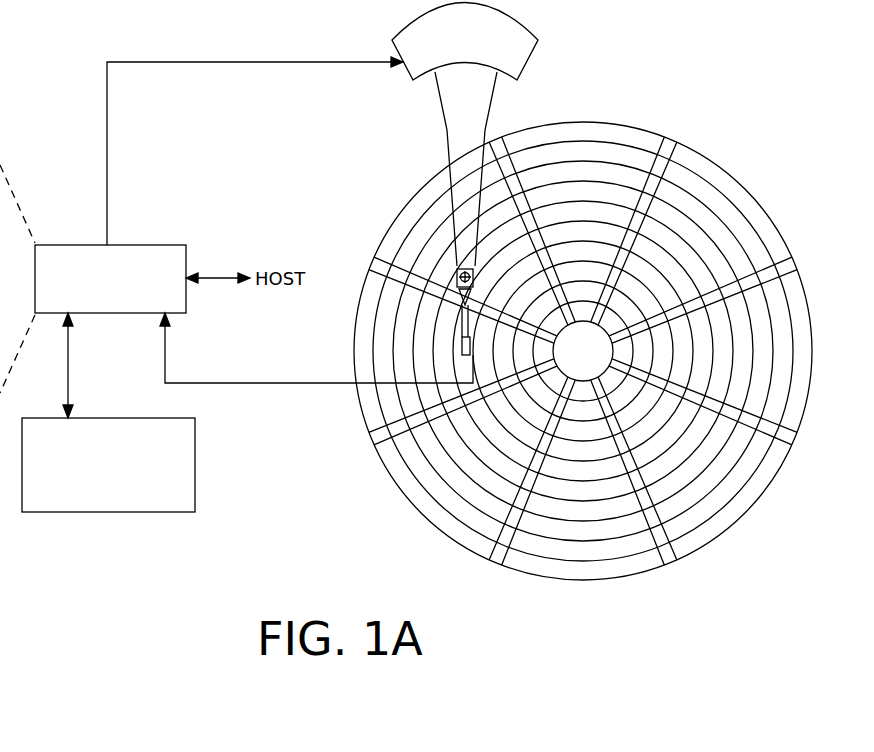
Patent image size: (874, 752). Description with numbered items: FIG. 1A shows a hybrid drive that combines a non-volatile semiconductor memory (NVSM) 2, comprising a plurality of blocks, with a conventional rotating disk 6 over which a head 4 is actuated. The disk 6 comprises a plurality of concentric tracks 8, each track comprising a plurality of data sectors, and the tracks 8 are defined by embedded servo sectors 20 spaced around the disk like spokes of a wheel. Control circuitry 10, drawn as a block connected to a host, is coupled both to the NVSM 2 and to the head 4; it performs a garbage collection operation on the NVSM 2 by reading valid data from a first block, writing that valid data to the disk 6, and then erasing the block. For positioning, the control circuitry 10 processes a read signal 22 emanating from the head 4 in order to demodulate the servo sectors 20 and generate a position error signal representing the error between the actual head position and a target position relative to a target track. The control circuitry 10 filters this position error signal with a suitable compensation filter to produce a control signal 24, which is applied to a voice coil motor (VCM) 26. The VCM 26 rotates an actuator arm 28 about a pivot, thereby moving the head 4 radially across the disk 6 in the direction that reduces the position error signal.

The non-volatile semiconductor memory (NVSM) 2 is at (195, 463).
The head 4 is at (452, 356).
The disk 6 is at (590, 342).
The tracks 8 is at (580, 150).
The control circuitry 10 is at (150, 245).
The embedded servo sectors 20 is at (590, 356).
The read signal 22 is at (250, 383).
The control signal 24 is at (107, 137).
The voice coil motor (VCM) 26 is at (411, 70).
The actuator arm 28 is at (447, 154).